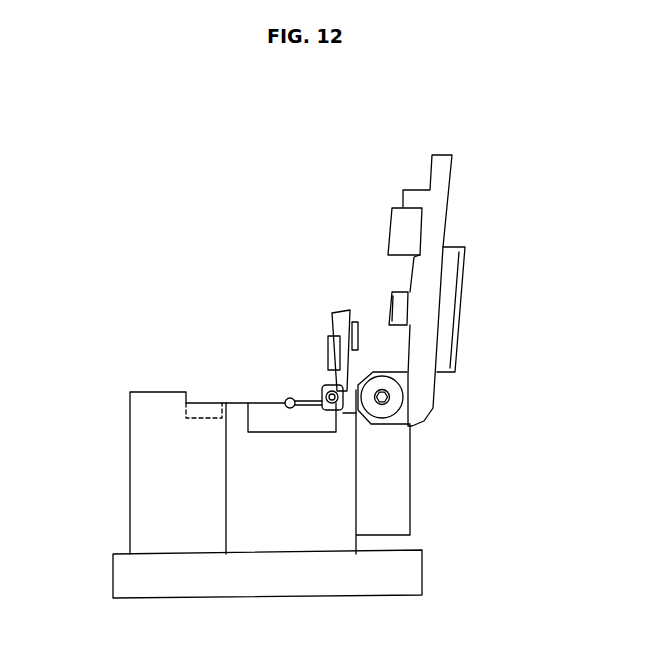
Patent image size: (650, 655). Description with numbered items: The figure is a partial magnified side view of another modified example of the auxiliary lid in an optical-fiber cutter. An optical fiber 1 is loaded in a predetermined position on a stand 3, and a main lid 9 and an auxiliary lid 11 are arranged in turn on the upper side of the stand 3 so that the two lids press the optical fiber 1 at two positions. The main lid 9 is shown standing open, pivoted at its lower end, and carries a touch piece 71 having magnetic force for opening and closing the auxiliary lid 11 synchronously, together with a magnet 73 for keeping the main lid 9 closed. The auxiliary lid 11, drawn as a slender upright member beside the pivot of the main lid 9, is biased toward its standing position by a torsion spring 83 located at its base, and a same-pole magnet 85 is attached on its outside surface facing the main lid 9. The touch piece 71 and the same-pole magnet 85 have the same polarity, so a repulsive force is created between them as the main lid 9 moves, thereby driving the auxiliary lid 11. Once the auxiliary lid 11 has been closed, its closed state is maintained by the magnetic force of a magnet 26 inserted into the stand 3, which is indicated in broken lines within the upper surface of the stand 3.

The stand 3 is at (140, 466).
The magnet 26 is at (210, 403).
The optical fiber 1 is at (288, 398).
The torsion spring 83 is at (323, 392).
The auxiliary lid 11 is at (330, 338).
The same-pole magnet 85 is at (353, 328).
The touch piece 71 is at (396, 292).
The magnet 73 is at (400, 210).
The main lid 9 is at (460, 281).